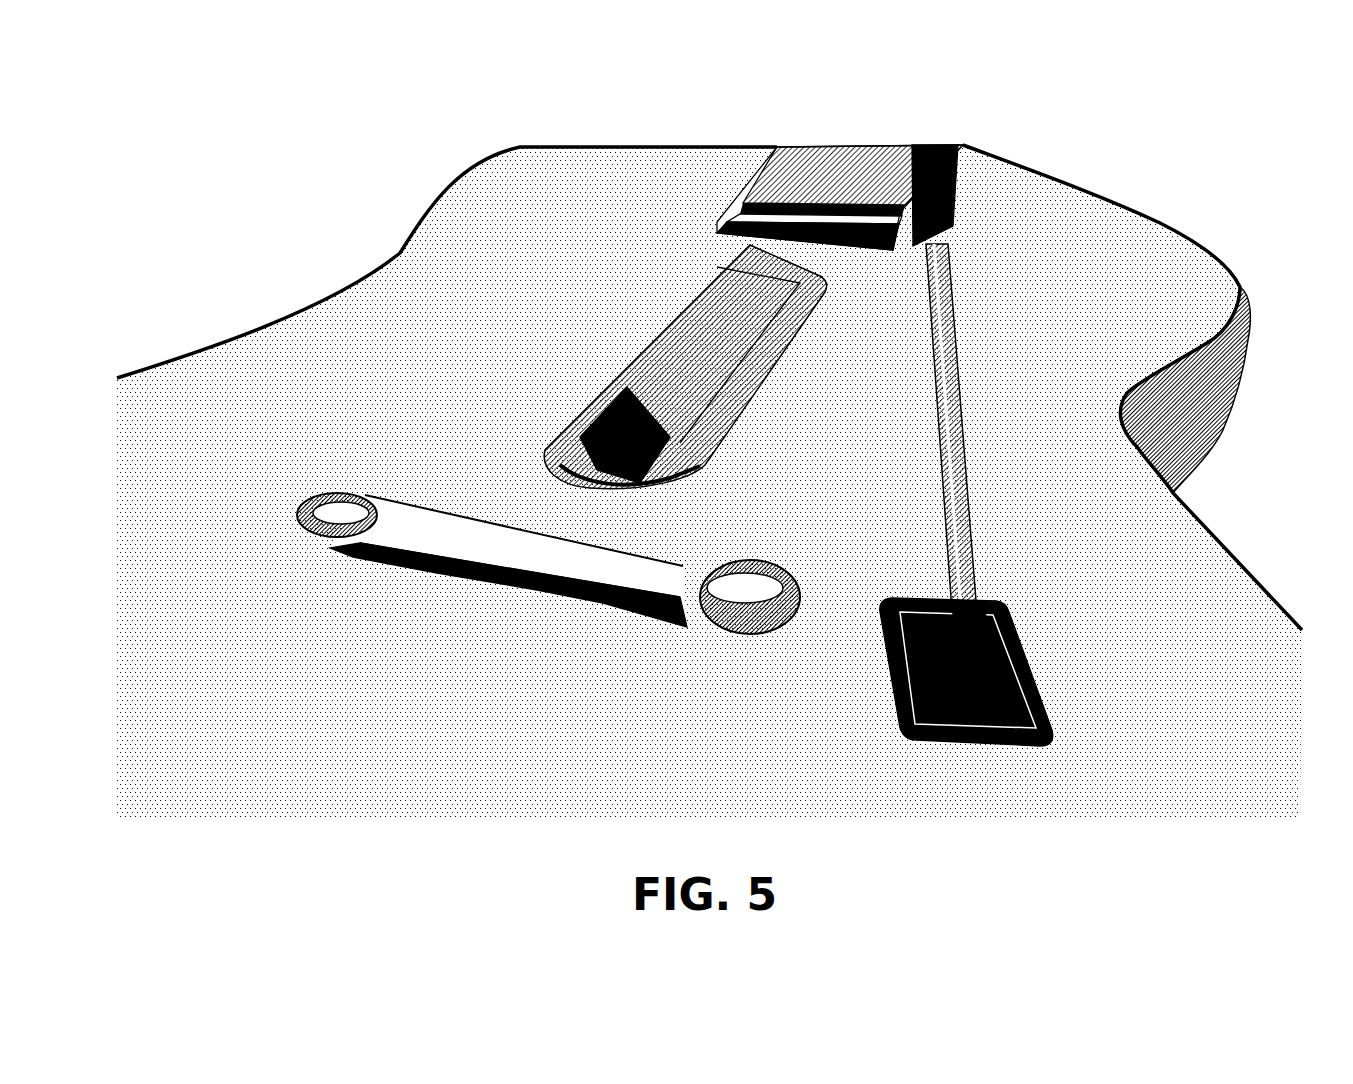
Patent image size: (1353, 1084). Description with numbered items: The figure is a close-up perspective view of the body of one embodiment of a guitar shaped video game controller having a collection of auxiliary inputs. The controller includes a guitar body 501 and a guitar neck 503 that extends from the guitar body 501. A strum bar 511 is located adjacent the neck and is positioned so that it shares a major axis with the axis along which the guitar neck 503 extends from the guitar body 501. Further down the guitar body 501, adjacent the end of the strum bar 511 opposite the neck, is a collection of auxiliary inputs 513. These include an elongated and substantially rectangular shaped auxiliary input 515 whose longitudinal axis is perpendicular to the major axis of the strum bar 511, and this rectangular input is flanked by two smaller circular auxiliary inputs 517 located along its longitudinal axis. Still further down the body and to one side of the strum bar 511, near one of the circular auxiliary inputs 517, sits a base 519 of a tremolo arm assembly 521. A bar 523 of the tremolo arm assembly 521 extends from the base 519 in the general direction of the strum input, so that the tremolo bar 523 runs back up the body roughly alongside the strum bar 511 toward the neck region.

The guitar body 501 is at (217, 772).
The guitar neck 503 is at (768, 167).
The strum bar 511 is at (640, 345).
The collection of auxiliary inputs 513 is at (523, 576).
The auxiliary input 515 is at (543, 600).
The circular auxiliary inputs 517 is at (330, 494).
The base 519 is at (1042, 702).
The tremolo arm assembly 521 is at (1130, 584).
The bar 523 is at (972, 443).